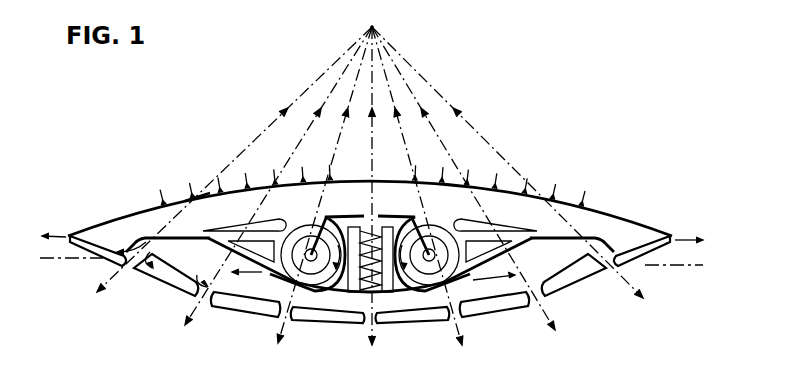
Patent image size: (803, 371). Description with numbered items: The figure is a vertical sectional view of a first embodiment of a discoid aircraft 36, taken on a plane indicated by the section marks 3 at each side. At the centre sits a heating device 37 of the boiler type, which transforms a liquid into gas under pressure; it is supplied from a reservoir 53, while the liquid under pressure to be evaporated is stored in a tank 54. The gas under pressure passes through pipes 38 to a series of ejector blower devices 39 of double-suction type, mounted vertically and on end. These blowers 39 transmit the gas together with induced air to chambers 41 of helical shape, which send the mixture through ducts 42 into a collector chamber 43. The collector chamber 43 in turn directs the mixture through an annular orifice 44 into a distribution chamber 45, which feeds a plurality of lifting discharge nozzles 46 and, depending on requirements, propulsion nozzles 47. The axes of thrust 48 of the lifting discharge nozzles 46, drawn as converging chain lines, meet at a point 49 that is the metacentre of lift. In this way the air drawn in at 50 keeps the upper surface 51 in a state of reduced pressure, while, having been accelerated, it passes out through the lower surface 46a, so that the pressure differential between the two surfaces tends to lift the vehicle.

The section line 3- 3 is at (367, 278).
The discoid aircraft 36 is at (611, 211).
The heating device 37 is at (383, 215).
The pipes 38 is at (323, 219).
The ejector blower devices 39 is at (412, 290).
The chambers of helical shape 41 is at (286, 244).
The ducts 42 is at (203, 240).
The collector chamber 43 is at (175, 253).
The annular orifice 44 is at (138, 247).
The distribution chamber 45 is at (306, 260).
The lifting discharge nozzles 46 is at (123, 270).
The lower surface 46a is at (332, 318).
The propulsion nozzles 47 is at (672, 242).
The axis of thrust 48 is at (307, 92).
The point 49 is at (373, 27).
The air drawn in 50 is at (197, 197).
The upper surface 51 is at (348, 177).
The reservoir 53 is at (265, 250).
The tank 54 is at (467, 222).